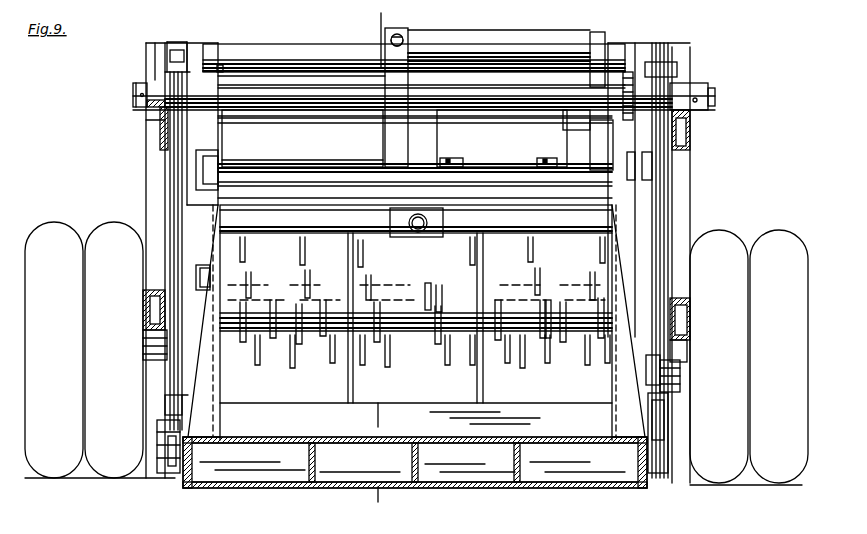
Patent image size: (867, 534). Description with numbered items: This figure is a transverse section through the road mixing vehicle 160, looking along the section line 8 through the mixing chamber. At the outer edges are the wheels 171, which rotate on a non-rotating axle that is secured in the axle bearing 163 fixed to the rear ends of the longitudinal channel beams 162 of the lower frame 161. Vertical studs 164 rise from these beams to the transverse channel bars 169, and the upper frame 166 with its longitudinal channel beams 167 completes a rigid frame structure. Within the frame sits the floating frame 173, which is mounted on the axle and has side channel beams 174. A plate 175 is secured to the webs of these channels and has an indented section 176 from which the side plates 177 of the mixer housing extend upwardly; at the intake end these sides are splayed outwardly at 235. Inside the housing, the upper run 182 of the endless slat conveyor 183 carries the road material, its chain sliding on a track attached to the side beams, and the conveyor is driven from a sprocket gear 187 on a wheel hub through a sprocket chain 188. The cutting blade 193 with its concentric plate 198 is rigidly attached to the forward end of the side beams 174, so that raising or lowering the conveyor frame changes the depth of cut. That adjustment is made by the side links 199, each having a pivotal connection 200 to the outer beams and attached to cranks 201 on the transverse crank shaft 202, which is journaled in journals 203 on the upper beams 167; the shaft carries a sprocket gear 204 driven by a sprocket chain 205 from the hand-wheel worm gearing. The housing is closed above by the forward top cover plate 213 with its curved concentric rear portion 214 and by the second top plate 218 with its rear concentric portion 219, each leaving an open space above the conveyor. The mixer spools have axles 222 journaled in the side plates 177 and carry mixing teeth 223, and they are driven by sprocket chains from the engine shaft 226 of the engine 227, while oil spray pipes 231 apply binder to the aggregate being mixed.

The section line 8 is at (372, 26).
The vehicle 160 is at (129, 123).
The lower frame 161 is at (131, 346).
The longitudinal channel beams 162 is at (150, 290).
The axle bearing 163 is at (670, 384).
The vertical studs 164 is at (152, 202).
The upper frame 166 is at (131, 79).
The longitudinal channel beams 167 is at (160, 136).
The transverse channel bars 169 is at (278, 50).
The wheels 171 is at (416, 353).
The floating frame 173 is at (161, 438).
The side channel beams 174 is at (182, 407).
The plate 175 is at (200, 418).
The indented section 176 is at (199, 228).
The side plates 177 is at (222, 270).
The upper run 182 is at (416, 336).
The endless slat conveyor 183 is at (545, 388).
The sprocket gear 187 is at (688, 358).
The sprocket chain 188 is at (682, 375).
The cutting blade 193 is at (286, 504).
The concentric plate 198 is at (415, 462).
The side links 199 is at (670, 192).
The pivotal connection 200 is at (665, 395).
The cranks 201 is at (636, 60).
The crank shaft 202 is at (424, 100).
The journals 203 is at (686, 88).
The sprocket gear 204 is at (615, 70).
The sprocket chain 205 is at (652, 72).
The forward top cover plate 213 is at (330, 180).
The curved concentric rear portion 214 is at (280, 172).
The second top plate 218 is at (307, 77).
The rear concentric portion 219 is at (238, 63).
The axles 222 is at (196, 160).
The mixing teeth 223 is at (432, 294).
The engine shaft 226 is at (655, 170).
The engine 227 is at (515, 39).
The oil spray pipes 231 is at (520, 215).
The splayed sides 235 is at (205, 397).